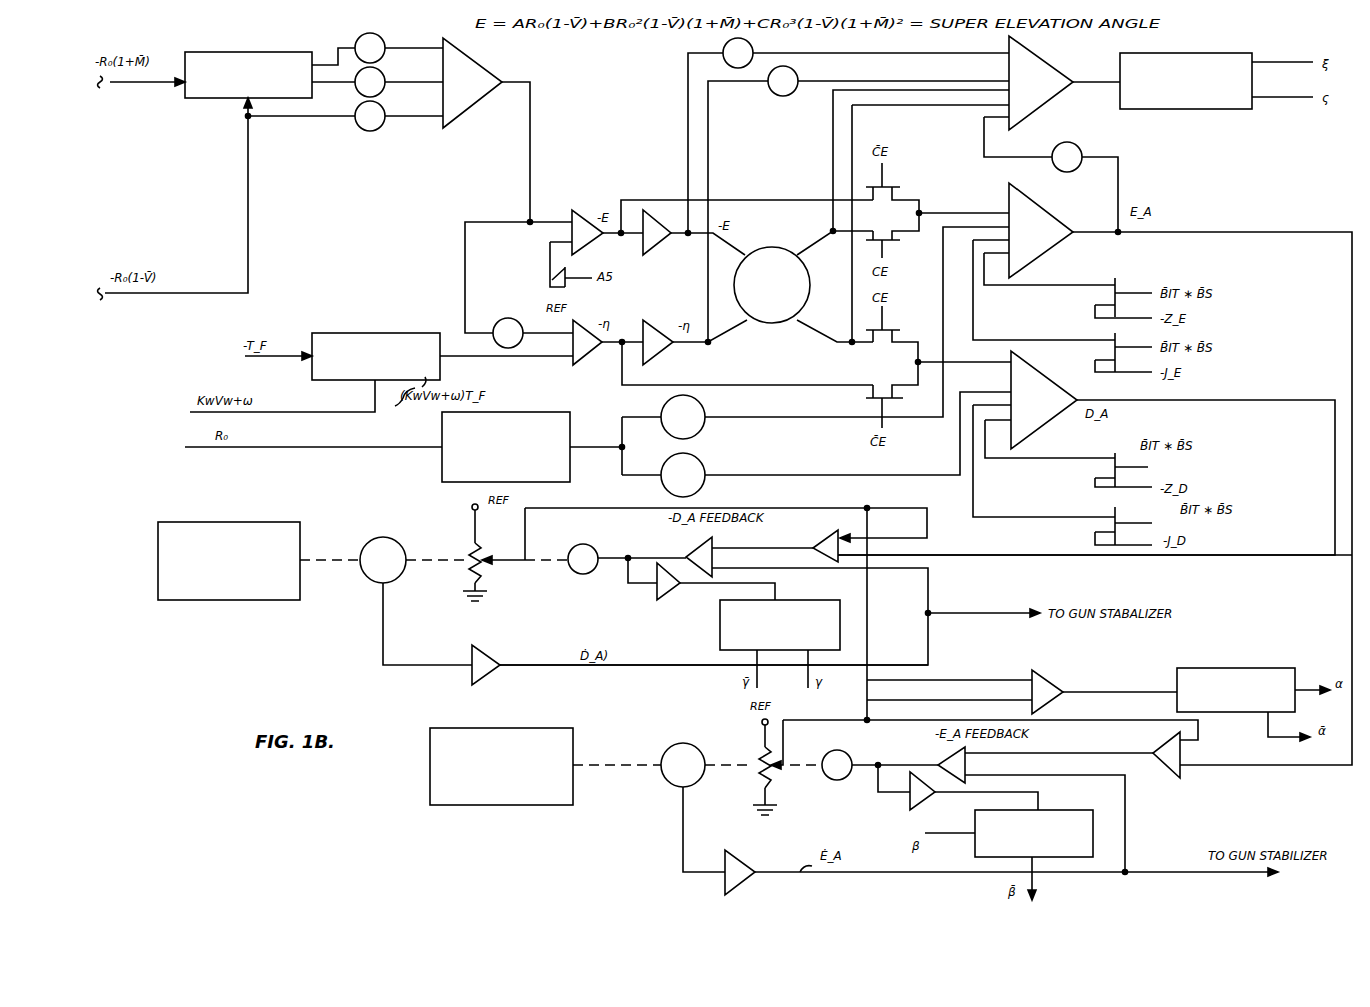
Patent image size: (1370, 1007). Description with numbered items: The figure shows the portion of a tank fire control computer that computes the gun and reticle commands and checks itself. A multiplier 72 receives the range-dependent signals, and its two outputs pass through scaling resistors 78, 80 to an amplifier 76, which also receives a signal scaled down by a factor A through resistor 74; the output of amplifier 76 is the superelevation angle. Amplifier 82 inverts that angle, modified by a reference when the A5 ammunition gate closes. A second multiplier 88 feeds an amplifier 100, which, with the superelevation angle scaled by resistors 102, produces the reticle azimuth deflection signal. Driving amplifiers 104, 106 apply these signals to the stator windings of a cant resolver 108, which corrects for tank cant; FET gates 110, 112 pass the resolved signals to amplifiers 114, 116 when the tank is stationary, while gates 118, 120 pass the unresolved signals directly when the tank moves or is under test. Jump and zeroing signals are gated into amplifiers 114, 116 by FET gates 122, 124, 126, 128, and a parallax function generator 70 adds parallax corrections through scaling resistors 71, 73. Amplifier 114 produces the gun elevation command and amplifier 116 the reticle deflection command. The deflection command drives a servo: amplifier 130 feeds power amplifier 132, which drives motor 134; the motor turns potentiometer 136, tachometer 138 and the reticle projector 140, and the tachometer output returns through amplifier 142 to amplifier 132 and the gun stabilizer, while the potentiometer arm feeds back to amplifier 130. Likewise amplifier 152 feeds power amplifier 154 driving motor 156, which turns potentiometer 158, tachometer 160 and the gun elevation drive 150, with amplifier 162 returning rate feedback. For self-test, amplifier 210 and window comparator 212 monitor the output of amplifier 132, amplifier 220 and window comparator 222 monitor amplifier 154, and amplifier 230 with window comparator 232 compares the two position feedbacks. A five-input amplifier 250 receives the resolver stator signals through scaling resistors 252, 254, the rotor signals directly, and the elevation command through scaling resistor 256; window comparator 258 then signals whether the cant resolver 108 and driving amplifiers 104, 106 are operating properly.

The parallax function generator 70 is at (442, 472).
The scaling resistor 71 is at (700, 403).
The multiplier 72 is at (210, 98).
The scaling resistor 73 is at (700, 461).
The resistor 74 is at (370, 131).
The amplifier 76 is at (460, 108).
The scaling resistor 78 is at (380, 70).
The scaling resistor 80 is at (380, 36).
The amplifier 82 is at (583, 213).
The multiplier 88 is at (400, 333).
The amplifier 100 is at (585, 350).
The scaling resistors 102 is at (508, 318).
The driving amplifier 104 is at (655, 213).
The driving amplifier 106 is at (655, 322).
The cant resolver 108 is at (766, 323).
The FET gate 110 is at (876, 236).
The FET gate 112 is at (894, 328).
The amplifier 114 is at (1040, 203).
The amplifier 116 is at (1040, 375).
The FET gate 118 is at (895, 185).
The FET gate 120 is at (866, 399).
The FET gate 122 is at (1118, 340).
The FET gate 124 is at (1118, 278).
The FET gate 126 is at (1118, 517).
The FET gate 128 is at (1118, 453).
The amplifier 130 is at (830, 530).
The power amplifier 132 is at (705, 542).
The motor 134 is at (590, 545).
The potentiometer 136 is at (497, 553).
The tachometer 138 is at (400, 545).
The reticle projector 140 is at (238, 585).
The amplifier 142 is at (485, 660).
The gun elevation drive 150 is at (495, 805).
The amplifier 152 is at (1165, 760).
The power amplifier 154 is at (970, 765).
The motor 156 is at (845, 752).
The potentiometer 158 is at (775, 774).
The tachometer 160 is at (676, 780).
The amplifier 162 is at (740, 860).
The amplifier 210 is at (657, 597).
The window comparator 212 is at (720, 632).
The amplifier 220 is at (910, 805).
The window comparator 222 is at (1093, 823).
The amplifier 230 is at (1048, 680).
The window comparator 232 is at (1268, 668).
The amplifier 250 is at (1045, 68).
The scaling resistor 252 is at (781, 96).
The scaling resistor 254 is at (736, 68).
The scaling resistor 256 is at (1078, 145).
The window comparator 258 is at (1200, 109).